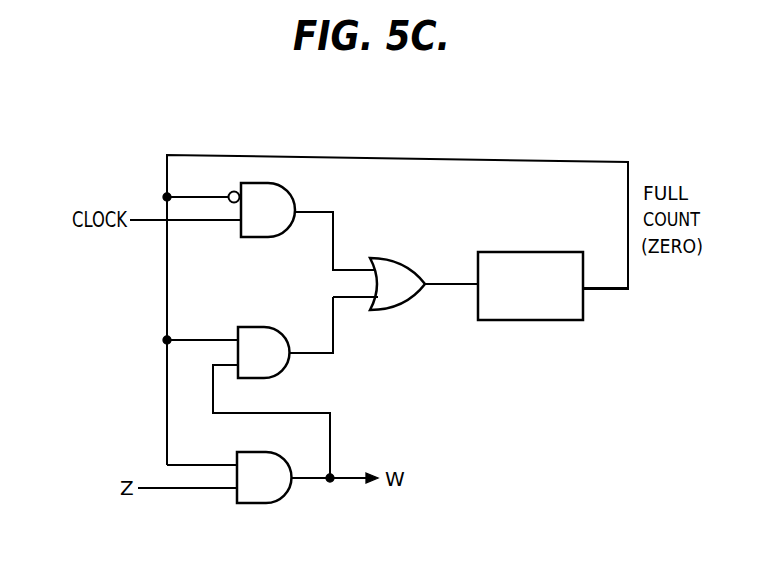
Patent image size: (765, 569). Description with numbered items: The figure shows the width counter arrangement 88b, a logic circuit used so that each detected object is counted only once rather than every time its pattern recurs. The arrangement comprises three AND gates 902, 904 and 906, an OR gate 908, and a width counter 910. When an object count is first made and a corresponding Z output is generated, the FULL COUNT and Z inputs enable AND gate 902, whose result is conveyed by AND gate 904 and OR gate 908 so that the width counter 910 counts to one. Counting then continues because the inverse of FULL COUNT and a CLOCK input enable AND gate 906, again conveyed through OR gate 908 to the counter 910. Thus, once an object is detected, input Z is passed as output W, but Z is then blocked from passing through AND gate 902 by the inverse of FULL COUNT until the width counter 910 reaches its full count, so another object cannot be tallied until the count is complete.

The width counter arrangement 88b is at (533, 130).
The AND gate 902 is at (278, 490).
The AND gate 904 is at (271, 341).
The AND gate 906 is at (281, 199).
The OR gate 908 is at (410, 258).
The width counter 910 is at (573, 312).